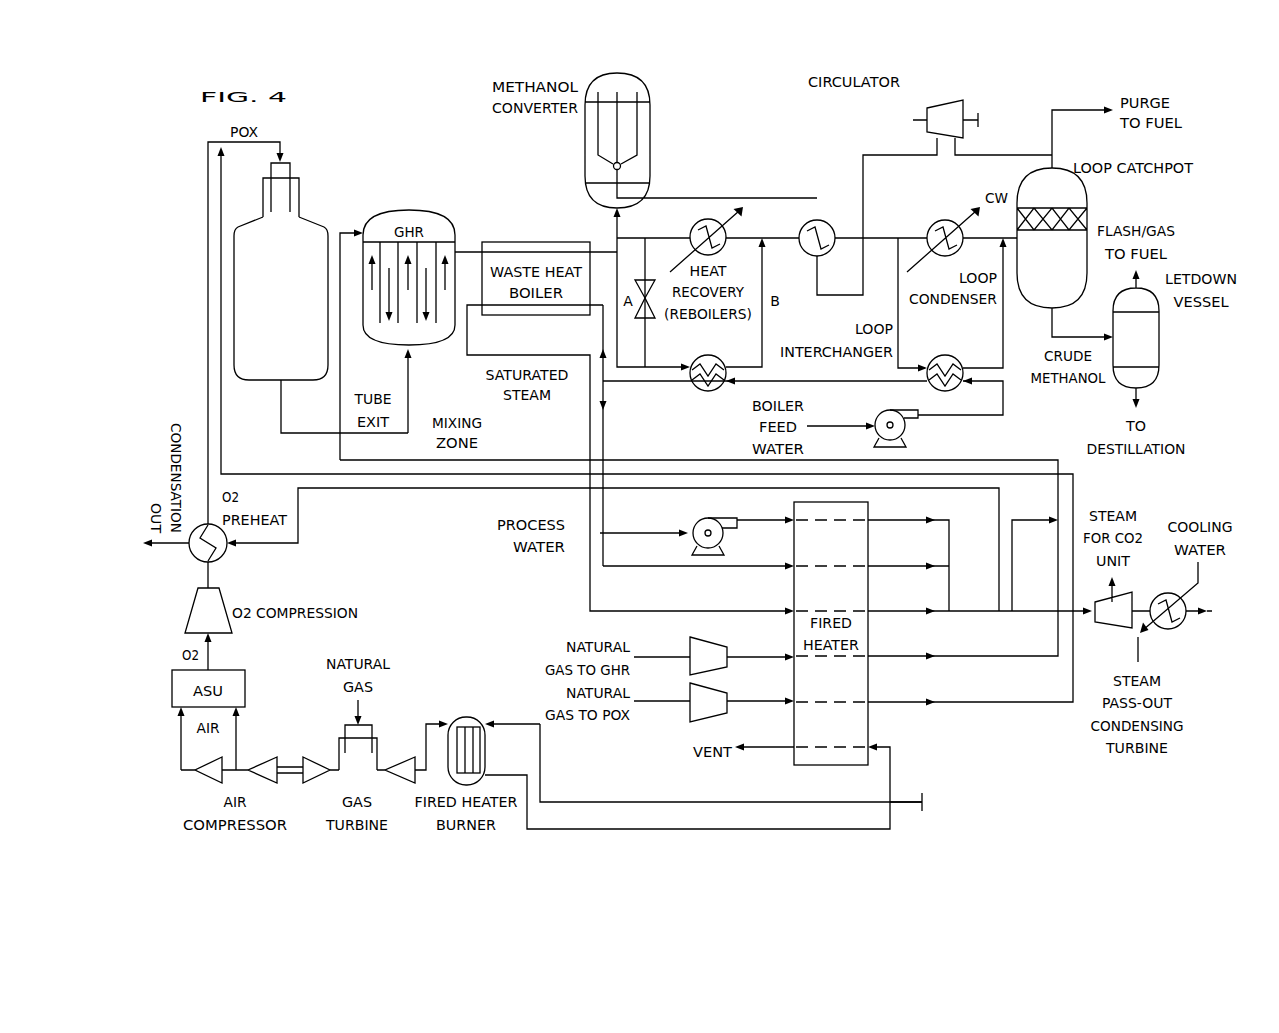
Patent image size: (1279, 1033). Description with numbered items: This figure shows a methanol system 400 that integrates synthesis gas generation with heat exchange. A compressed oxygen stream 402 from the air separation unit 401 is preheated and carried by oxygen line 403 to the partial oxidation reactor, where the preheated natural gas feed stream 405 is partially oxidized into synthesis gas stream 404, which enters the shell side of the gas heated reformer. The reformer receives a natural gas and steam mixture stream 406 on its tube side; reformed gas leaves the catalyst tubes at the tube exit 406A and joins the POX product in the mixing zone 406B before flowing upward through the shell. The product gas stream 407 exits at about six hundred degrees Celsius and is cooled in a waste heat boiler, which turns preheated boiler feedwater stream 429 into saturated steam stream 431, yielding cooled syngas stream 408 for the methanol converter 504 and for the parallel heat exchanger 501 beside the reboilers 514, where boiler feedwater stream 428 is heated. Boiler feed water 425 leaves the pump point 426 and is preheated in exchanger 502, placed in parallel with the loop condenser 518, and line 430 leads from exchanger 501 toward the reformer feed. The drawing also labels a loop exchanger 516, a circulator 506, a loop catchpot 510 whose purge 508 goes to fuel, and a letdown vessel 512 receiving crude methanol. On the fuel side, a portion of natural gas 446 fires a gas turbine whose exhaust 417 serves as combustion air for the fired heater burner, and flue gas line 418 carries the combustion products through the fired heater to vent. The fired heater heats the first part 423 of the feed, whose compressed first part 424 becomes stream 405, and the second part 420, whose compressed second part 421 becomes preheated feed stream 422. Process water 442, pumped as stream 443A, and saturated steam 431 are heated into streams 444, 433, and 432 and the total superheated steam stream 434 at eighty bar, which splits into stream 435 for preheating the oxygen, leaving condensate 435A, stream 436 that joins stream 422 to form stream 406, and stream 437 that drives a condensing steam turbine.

The methanol system 400 is at (410, 140).
The air separation unit / oxygen supply 401 is at (208, 663).
The compressed oxygen stream 402 is at (228, 556).
The oxygen feed line to POX 403 is at (206, 338).
The synthesis gas stream 404 is at (316, 432).
The preheated feed stream 405 is at (890, 704).
The natural gas and steam stream 406 is at (340, 442).
The GHR tube exit 406A is at (408, 322).
The mixing zone 406B is at (410, 388).
The product gas stream 407 is at (465, 250).
The cooled syngas stream 408 is at (612, 232).
The gas turbine exhaust 417 is at (432, 722).
The flue gas line 418 is at (500, 773).
The second part of the feed stream 420 is at (668, 659).
The compressed second part 421 is at (773, 659).
The preheated feed stream 422 is at (890, 658).
The first part of the feed stream 423 is at (668, 703).
The compressed first part 424 is at (773, 703).
The boiler feed water inlet 425 is at (845, 425).
The pump point 426 is at (955, 417).
The boiler feedwater stream point 428 is at (638, 385).
The preheated boiler feedwater stream 429 is at (603, 328).
The water stream to GHR feed 430 is at (606, 432).
The steam stream 431 is at (468, 328).
The steam stream 432 is at (890, 613).
The steam stream 433 is at (890, 568).
The total superheated steam stream 434 is at (963, 608).
The steam stream 435 is at (962, 490).
The condensate outlet 435A is at (172, 548).
The steam stream 436 is at (1020, 522).
The steam stream 437 is at (1075, 614).
The process water 442 is at (668, 530).
The process water to fired heater 443A is at (770, 522).
The steam stream 444 is at (890, 522).
The natural gas feed portion 446 is at (350, 705).
The heat exchanger 501 is at (712, 392).
The exchanger 502 is at (952, 355).
The methanol converter 504 is at (585, 143).
The circulator 506 is at (927, 112).
The purge gas line 508 is at (1075, 107).
The loop catchpot 510 is at (1088, 200).
The letdown vessel 512 is at (1160, 333).
The reboilers 514 is at (692, 228).
The loop heat exchanger 516 is at (833, 222).
The loop condenser 518 is at (940, 222).